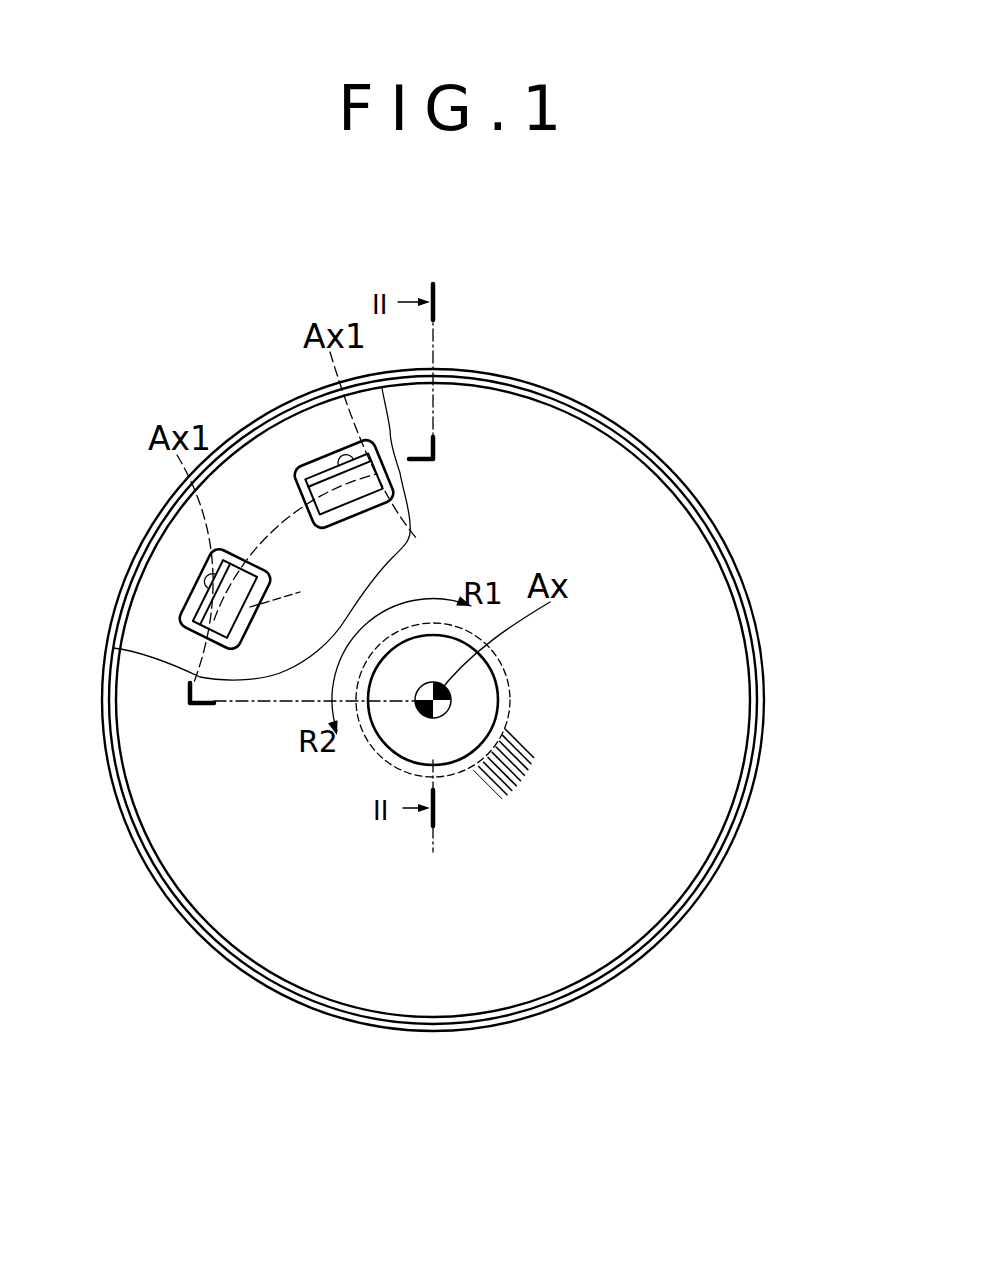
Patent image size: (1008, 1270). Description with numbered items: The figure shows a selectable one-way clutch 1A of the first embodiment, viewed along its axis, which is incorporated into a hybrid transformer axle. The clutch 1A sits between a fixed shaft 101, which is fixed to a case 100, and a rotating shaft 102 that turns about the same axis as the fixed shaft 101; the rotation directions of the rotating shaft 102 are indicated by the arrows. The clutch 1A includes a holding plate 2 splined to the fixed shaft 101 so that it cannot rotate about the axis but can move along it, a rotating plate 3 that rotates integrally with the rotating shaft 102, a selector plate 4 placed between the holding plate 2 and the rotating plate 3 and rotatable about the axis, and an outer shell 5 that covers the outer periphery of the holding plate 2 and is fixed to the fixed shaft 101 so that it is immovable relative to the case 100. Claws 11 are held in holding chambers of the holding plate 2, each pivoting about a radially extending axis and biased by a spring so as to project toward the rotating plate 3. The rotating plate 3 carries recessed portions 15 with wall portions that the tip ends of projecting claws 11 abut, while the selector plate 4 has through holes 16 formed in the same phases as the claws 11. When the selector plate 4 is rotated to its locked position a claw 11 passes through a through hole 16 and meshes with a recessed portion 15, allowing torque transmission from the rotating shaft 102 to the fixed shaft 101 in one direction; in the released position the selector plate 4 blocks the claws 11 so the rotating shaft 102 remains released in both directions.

The selectable one-way clutch 1A is at (553, 328).
The holding plate 2 is at (182, 622).
The rotating plate 3 is at (122, 728).
The selector plate 4 is at (150, 592).
The outer shell 5 is at (623, 430).
The claw 11 is at (235, 612).
The recessed portion 15 is at (338, 607).
The through hole 16 is at (210, 578).
The case 100 is at (680, 692).
The fixed shaft 101 is at (510, 715).
The rotating shaft 102 is at (487, 688).